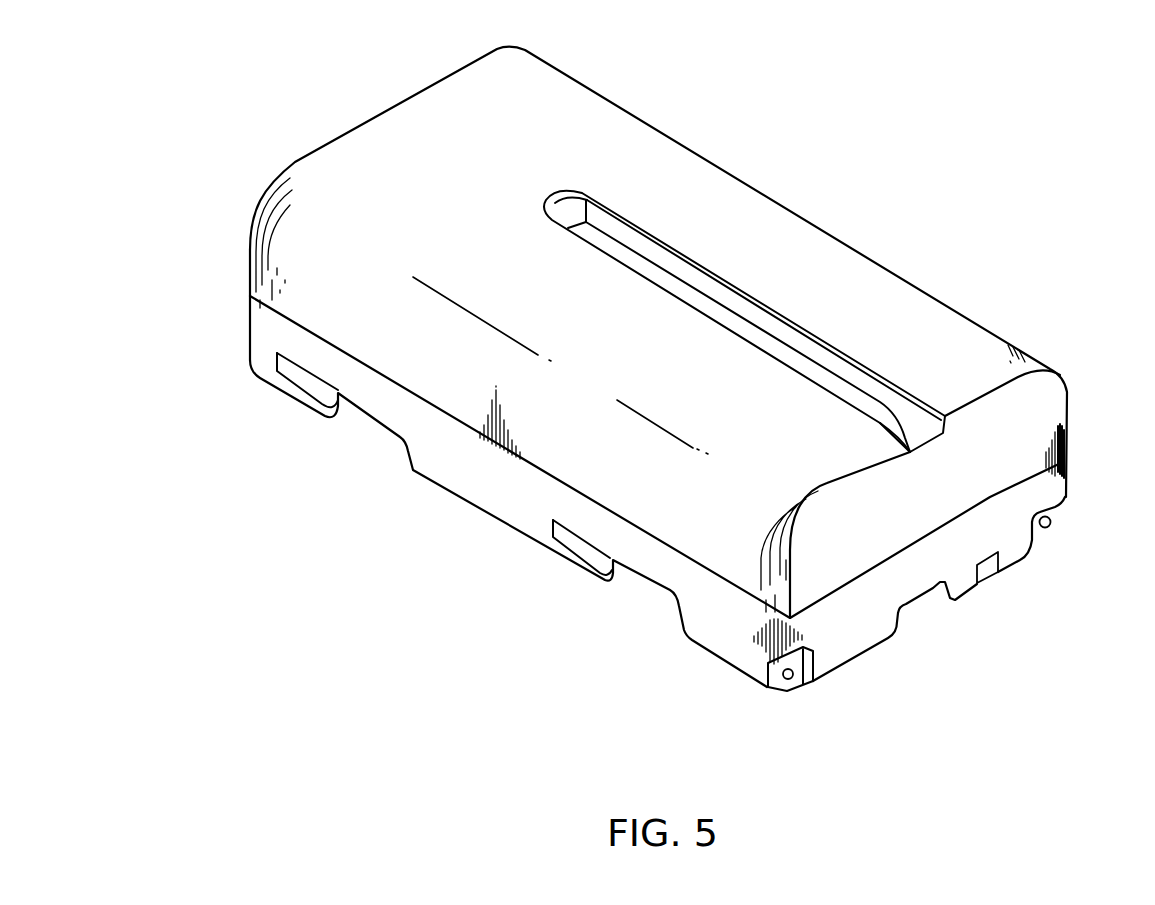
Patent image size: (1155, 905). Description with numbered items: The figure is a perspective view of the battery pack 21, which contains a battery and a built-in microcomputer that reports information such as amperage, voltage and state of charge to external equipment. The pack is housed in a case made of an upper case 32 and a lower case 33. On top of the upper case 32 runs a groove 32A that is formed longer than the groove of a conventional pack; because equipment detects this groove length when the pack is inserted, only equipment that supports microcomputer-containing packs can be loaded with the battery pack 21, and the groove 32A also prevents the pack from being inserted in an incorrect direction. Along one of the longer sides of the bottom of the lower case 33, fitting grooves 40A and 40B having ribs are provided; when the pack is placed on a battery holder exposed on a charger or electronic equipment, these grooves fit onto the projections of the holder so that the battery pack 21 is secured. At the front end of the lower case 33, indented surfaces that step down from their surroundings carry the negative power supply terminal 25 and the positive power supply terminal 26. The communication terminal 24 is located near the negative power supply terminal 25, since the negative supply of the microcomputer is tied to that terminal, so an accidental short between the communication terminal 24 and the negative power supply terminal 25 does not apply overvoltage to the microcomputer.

The battery pack 21 is at (199, 645).
The communication terminal 24 is at (988, 568).
The negative power supply terminal 25 is at (1053, 525).
The positive power supply terminal 26 is at (794, 679).
The upper case 32 is at (810, 243).
The groove 32A is at (622, 186).
The lower case 33 is at (1050, 490).
The fitting groove 40A is at (348, 427).
The fitting groove 40B is at (622, 598).